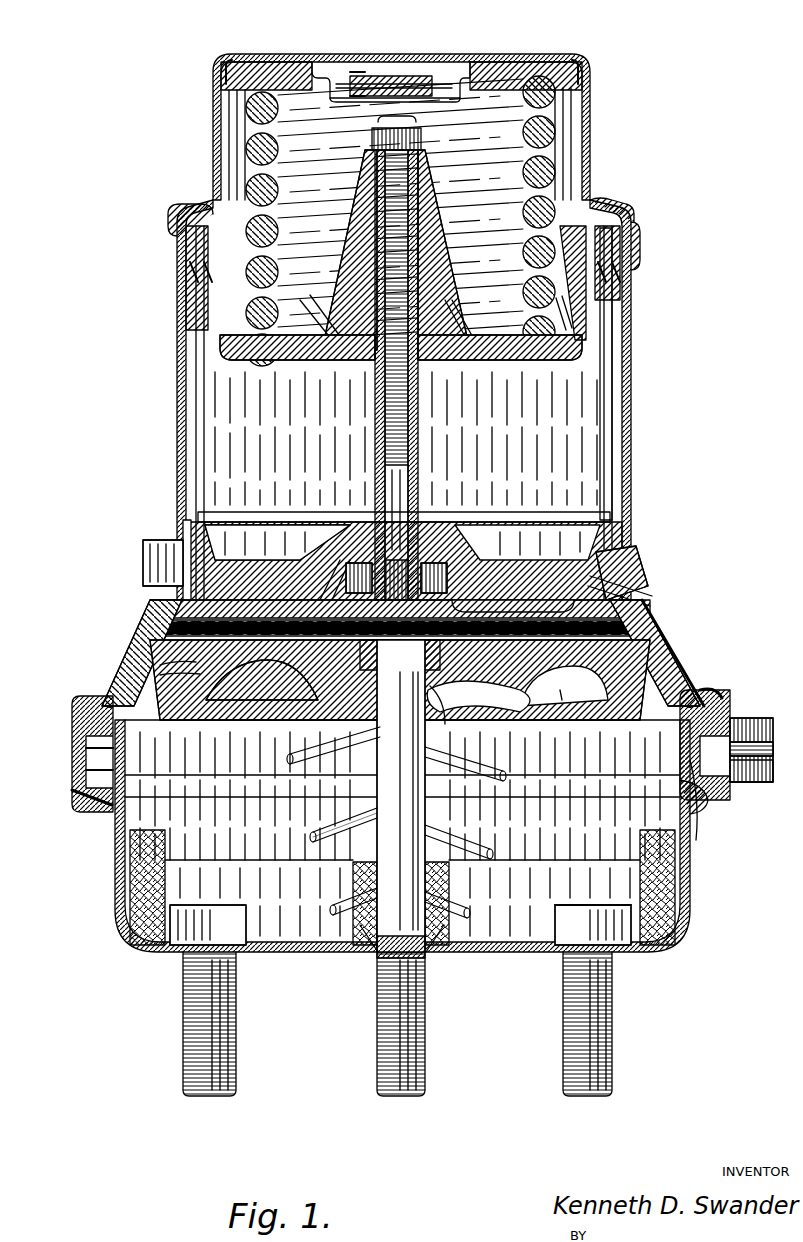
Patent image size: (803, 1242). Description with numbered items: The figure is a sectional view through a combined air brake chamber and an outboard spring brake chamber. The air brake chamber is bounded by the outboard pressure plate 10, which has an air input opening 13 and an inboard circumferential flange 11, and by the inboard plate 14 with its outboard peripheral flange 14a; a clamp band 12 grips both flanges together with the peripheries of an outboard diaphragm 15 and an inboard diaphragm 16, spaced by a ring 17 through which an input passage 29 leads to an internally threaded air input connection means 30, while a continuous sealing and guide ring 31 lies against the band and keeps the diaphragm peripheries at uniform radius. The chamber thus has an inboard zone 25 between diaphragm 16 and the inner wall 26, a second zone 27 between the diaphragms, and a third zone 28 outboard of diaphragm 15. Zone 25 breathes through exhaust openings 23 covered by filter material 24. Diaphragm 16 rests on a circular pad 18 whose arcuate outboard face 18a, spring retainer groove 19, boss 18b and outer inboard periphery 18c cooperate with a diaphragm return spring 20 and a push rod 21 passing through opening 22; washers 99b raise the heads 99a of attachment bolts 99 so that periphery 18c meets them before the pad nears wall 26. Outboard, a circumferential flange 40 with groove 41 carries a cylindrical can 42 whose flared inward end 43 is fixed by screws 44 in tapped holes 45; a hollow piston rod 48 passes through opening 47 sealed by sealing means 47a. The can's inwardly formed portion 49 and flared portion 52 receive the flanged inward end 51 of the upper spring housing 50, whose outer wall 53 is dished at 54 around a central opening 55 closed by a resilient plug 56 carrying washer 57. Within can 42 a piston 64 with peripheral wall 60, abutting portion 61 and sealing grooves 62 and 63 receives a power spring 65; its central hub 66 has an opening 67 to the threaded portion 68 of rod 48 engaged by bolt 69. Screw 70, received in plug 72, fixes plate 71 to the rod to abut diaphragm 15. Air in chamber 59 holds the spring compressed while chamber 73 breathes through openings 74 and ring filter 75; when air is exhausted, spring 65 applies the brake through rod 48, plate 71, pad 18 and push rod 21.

The outboard pressure plate 10 is at (652, 636).
The inboard circumferential flange 11 is at (712, 692).
The clamp band 12 is at (72, 792).
The air input opening 13 is at (634, 558).
The inboard plate 14 is at (690, 836).
The outboard peripheral flange 14a is at (700, 810).
The outboard diaphragm 15 is at (668, 668).
The inboard diaphragm 16 is at (644, 718).
The spacer ring 17 is at (86, 762).
The circular pad 18 is at (400, 695).
The arcuate outboard face 18a is at (532, 694).
The boss 18b is at (446, 724).
The outer inboard periphery 18c is at (564, 698).
The spring retainer groove 19 is at (266, 752).
The diaphragm return spring 20 is at (310, 838).
The push rod 21 is at (412, 842).
The opening 22 is at (370, 958).
The air exhaust openings 23 is at (130, 908).
The filter material 24 is at (402, 900).
The inboard zone 25 is at (150, 836).
The inner wall 26 is at (272, 942).
The second zone 27 is at (152, 652).
The third zone 28 is at (658, 580).
The input passage 29 is at (736, 720).
The air input connection means 30 is at (760, 786).
The sealing and guide ring 31 is at (72, 728).
The circumferential flange 40 is at (584, 522).
The circumferential groove 41 is at (612, 500).
The cylindrical can 42 is at (632, 380).
The outwardly flared inward end 43 is at (184, 556).
The screws or bolts 44 is at (142, 560).
The tapped holes 45 is at (404, 536).
The opening 47 is at (440, 552).
The piston rod sealing means 47a is at (350, 544).
The hollow piston rod 48 is at (420, 460).
The radially inwardly formed portion 49 is at (610, 203).
The upper spring housing 50 is at (591, 128).
The outwardly flanged inward end 51 is at (573, 280).
The upwardly flared portion 52 is at (200, 204).
The outer wall 53 is at (560, 62).
The dished portion 54 is at (470, 74).
The central opening 55 is at (430, 76).
The resilient plug 56 is at (412, 74).
The washer 57 is at (380, 70).
The chamber 59 is at (208, 384).
The outer peripheral wall 60 is at (212, 318).
The wall engaging portion 61 is at (634, 226).
The circumferential groove 62 is at (632, 252).
The circumferential groove 63 is at (560, 296).
The piston 64 is at (516, 356).
The power spring 65 is at (524, 212).
The central hub 66 is at (440, 142).
The opening 67 is at (372, 144).
The internally threaded portion 68 is at (364, 216).
The threaded bolt 69 is at (372, 136).
The screw 70 is at (404, 640).
The plate 71 is at (460, 588).
The internally threaded plug 72 is at (396, 534).
The chamber 73 is at (216, 136).
The openings 74 is at (230, 62).
The ring filter 75 is at (530, 66).
The attachment bolts 99 is at (186, 1004).
The bolt heads 99a is at (576, 912).
The washers 99b is at (258, 955).